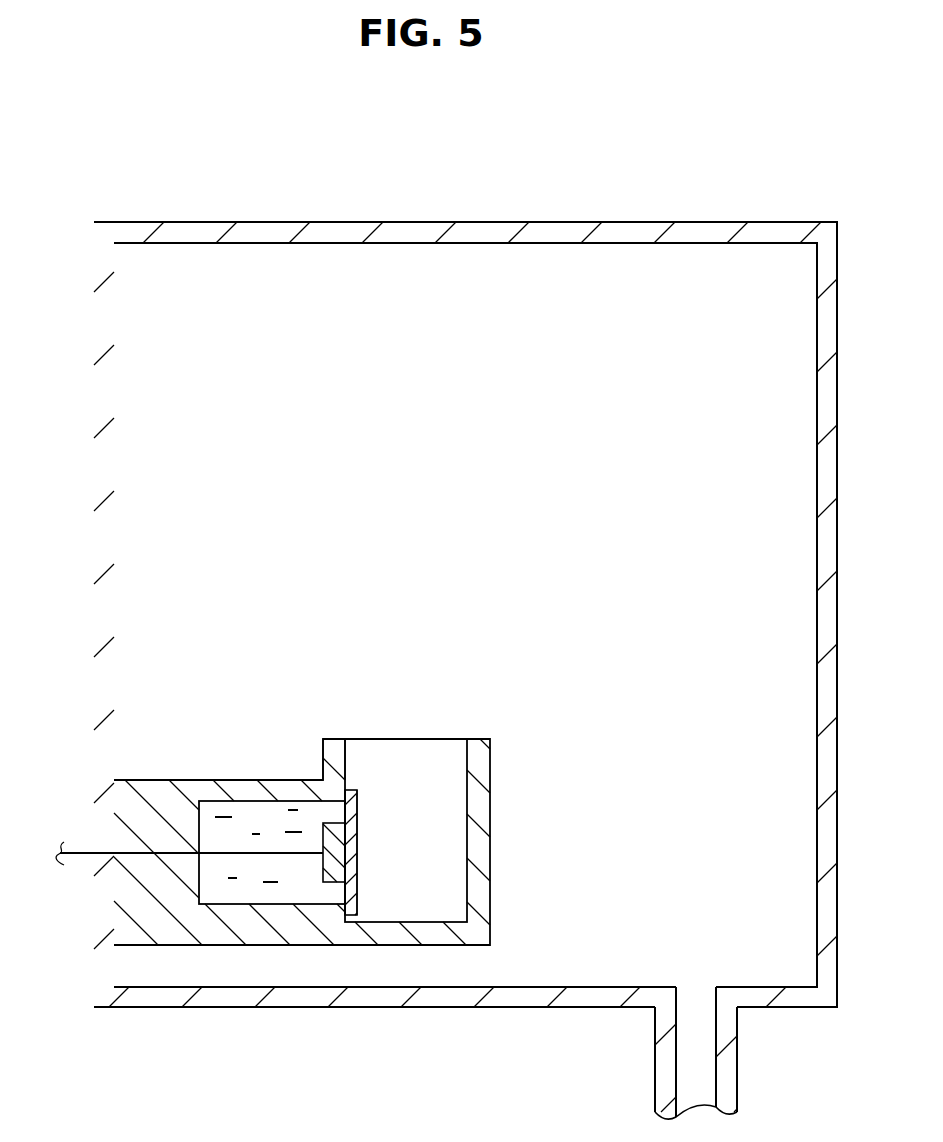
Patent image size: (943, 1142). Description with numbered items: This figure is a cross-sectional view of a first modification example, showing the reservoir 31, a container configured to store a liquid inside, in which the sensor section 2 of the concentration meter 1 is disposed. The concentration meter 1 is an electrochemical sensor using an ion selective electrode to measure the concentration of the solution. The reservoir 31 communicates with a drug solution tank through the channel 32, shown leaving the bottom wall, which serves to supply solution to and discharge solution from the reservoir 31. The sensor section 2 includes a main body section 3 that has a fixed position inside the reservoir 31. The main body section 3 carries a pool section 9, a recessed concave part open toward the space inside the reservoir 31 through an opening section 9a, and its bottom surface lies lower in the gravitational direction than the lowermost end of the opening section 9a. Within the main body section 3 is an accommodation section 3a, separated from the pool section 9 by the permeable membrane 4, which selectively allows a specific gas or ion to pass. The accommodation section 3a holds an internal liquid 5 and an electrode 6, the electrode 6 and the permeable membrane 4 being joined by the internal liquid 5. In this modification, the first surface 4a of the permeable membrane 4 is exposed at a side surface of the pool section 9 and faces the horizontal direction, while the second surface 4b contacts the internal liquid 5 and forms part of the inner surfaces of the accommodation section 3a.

The concentration meter 1 is at (446, 631).
The sensor section 2 is at (332, 830).
The main body section 3 is at (329, 832).
The accommodation section 3a is at (277, 802).
The permeable membrane 4 is at (415, 887).
The first surface 4a is at (357, 878).
The second surface 4b is at (345, 897).
The internal liquid 5 is at (218, 805).
The electrode 6 is at (323, 823).
The pool section 9 is at (470, 806).
The opening section 9a is at (346, 754).
The reservoir 31 is at (462, 222).
The channel 32 is at (655, 1096).